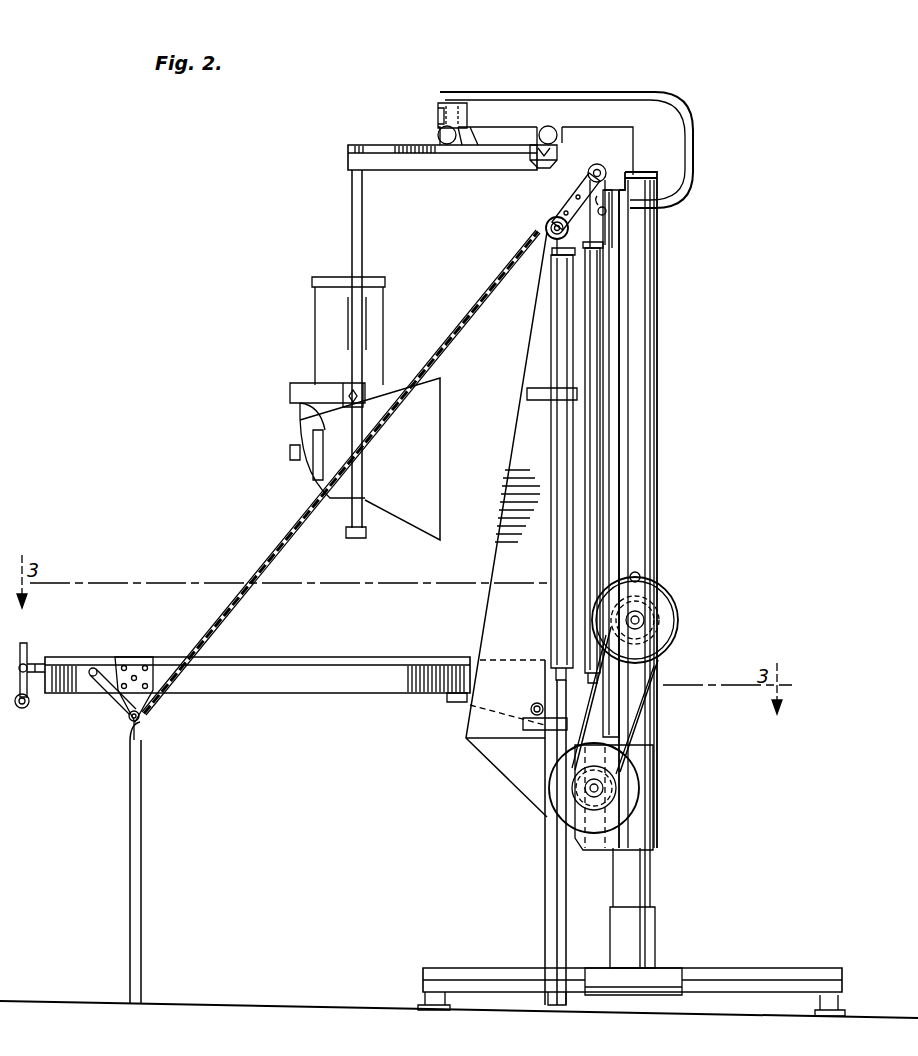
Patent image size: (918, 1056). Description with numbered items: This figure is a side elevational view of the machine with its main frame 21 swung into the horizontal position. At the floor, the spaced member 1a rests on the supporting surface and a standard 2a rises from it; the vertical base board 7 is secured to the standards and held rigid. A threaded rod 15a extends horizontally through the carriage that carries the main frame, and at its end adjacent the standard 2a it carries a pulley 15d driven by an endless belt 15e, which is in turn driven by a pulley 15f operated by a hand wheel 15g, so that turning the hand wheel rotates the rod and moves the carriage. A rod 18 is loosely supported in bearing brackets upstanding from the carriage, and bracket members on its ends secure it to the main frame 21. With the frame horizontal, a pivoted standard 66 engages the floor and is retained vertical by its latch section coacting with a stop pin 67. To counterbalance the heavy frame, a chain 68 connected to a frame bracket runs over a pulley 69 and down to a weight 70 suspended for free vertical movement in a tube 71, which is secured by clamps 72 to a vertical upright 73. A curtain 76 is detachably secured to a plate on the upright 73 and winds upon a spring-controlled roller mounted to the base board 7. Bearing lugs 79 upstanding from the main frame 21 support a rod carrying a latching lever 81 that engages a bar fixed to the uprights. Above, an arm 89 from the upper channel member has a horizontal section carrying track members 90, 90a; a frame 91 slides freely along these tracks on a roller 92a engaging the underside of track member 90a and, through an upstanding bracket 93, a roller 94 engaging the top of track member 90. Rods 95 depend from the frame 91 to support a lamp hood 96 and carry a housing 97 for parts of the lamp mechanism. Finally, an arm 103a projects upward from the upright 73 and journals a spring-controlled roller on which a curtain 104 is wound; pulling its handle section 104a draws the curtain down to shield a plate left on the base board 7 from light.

The spaced member 1a is at (736, 982).
The standard 2a is at (640, 883).
The vertical base board 7 is at (606, 336).
The threaded rod 15a is at (592, 790).
The pulley 15d is at (600, 800).
The endless belt 15e is at (640, 708).
The pulley 15f is at (660, 620).
The hand wheel 15g is at (667, 592).
The rod 18 is at (532, 705).
The main frame 21 is at (361, 695).
The standard 66 is at (138, 838).
The stop pin 67 is at (91, 680).
The chain 68 is at (272, 540).
The pulley 69 is at (545, 228).
The weight 70 is at (556, 258).
The tube 71 is at (547, 886).
The clamp 72 is at (538, 392).
The vertical upright 73 is at (498, 563).
The curtain 76 is at (592, 456).
The bearing lug 79 is at (35, 675).
The latching lever 81 is at (27, 652).
The arm 89 is at (590, 96).
The track member 90 is at (437, 136).
The track member 90a is at (558, 138).
The frame 91 is at (468, 172).
The roller 92a is at (540, 168).
The upstanding bracket 93 is at (470, 104).
The roller 94 is at (440, 108).
The rod 95 is at (352, 229).
The lamp hood 96 is at (430, 447).
The housing 97 is at (315, 333).
The arm 103a is at (575, 190).
The curtain 104 is at (604, 170).
The handle section 104a is at (612, 214).